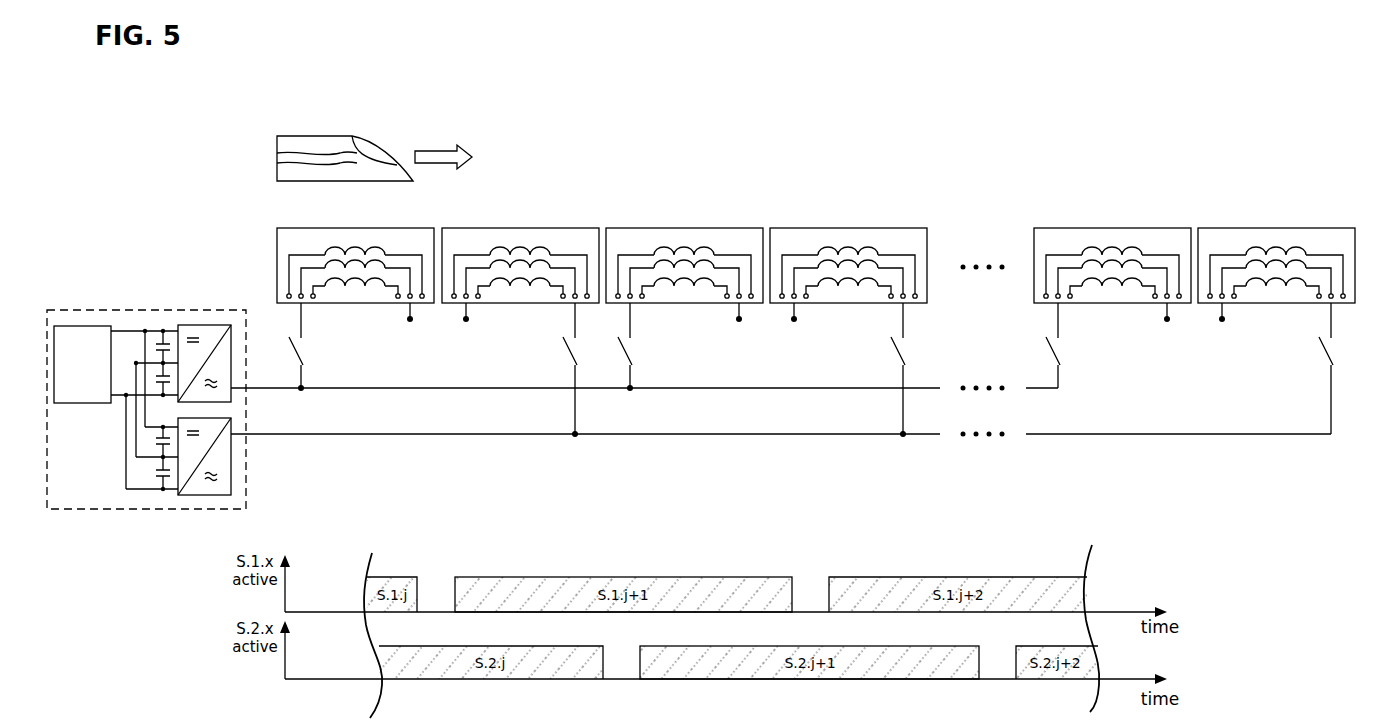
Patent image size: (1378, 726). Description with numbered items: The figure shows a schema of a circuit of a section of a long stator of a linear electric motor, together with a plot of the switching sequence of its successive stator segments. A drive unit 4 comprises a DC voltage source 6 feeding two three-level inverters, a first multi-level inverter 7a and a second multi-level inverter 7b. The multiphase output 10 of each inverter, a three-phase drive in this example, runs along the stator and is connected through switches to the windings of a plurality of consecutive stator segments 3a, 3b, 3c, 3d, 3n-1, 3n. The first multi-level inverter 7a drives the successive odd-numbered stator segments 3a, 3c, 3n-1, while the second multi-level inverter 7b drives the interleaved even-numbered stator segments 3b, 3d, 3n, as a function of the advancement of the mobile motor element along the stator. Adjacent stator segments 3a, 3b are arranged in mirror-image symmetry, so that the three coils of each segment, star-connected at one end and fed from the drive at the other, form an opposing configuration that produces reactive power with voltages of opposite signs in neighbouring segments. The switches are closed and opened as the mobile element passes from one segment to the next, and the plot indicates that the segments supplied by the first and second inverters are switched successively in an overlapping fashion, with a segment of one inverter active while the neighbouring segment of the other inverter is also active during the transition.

The stator segment 3a is at (404, 227).
The stator segment 3b is at (561, 227).
The stator segment 3c is at (720, 227).
The stator segment 3d is at (885, 227).
The stator segment 3n-1 is at (1070, 227).
The stator segment 3n is at (1244, 227).
The drive unit 4 is at (152, 302).
The DC voltage source 6 is at (90, 325).
The first multi-level inverter 7a is at (200, 325).
The second multi-level inverter 7b is at (199, 495).
The multiphase output 10 is at (240, 434).